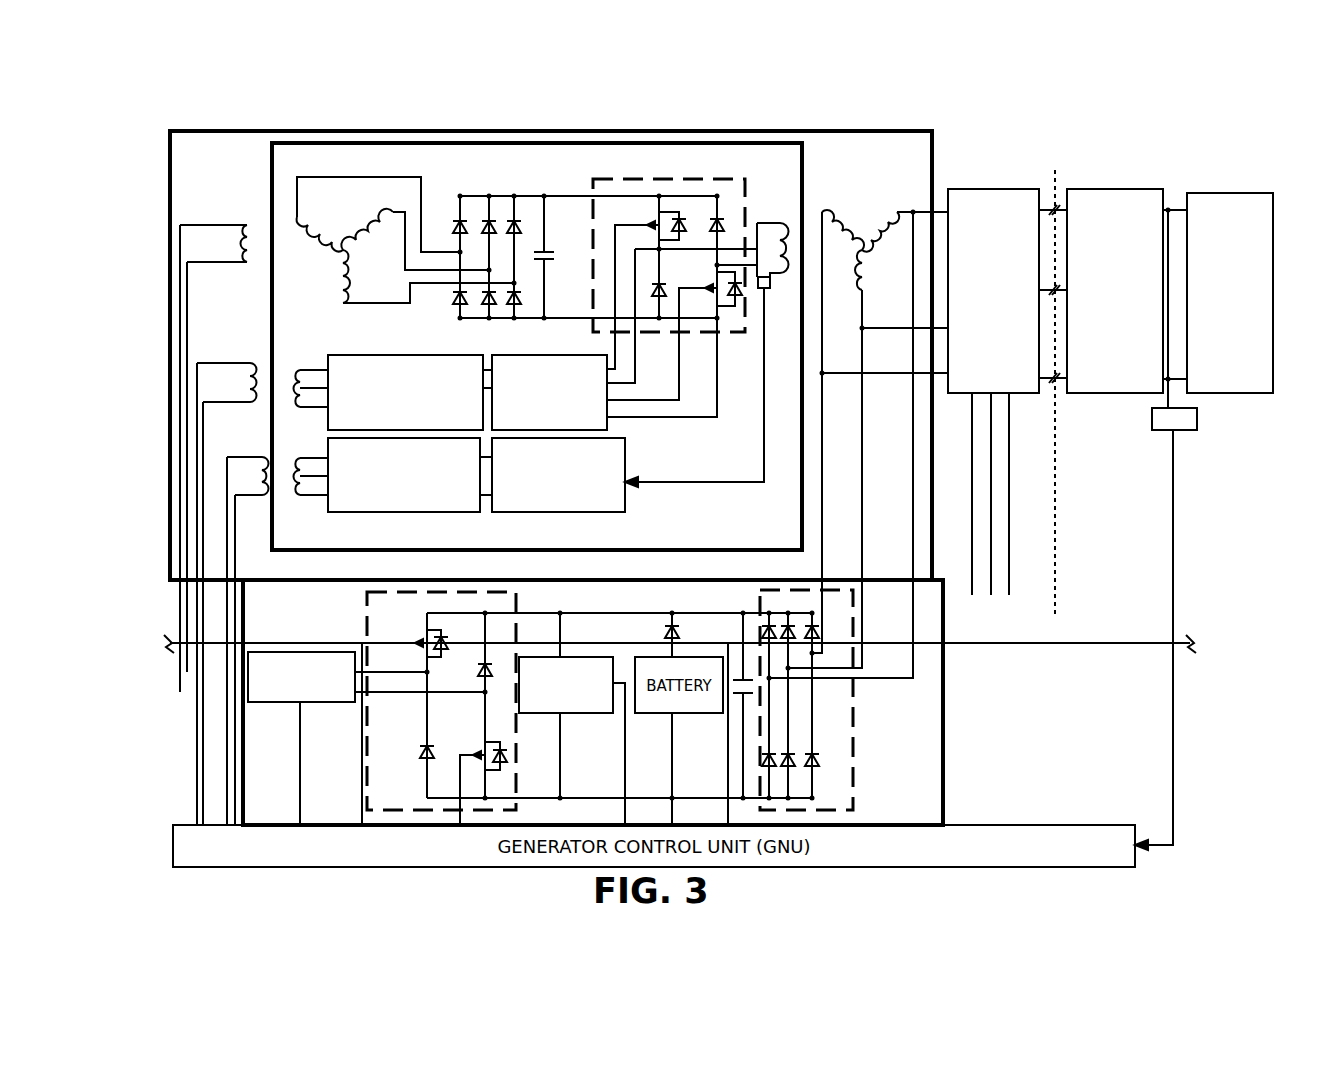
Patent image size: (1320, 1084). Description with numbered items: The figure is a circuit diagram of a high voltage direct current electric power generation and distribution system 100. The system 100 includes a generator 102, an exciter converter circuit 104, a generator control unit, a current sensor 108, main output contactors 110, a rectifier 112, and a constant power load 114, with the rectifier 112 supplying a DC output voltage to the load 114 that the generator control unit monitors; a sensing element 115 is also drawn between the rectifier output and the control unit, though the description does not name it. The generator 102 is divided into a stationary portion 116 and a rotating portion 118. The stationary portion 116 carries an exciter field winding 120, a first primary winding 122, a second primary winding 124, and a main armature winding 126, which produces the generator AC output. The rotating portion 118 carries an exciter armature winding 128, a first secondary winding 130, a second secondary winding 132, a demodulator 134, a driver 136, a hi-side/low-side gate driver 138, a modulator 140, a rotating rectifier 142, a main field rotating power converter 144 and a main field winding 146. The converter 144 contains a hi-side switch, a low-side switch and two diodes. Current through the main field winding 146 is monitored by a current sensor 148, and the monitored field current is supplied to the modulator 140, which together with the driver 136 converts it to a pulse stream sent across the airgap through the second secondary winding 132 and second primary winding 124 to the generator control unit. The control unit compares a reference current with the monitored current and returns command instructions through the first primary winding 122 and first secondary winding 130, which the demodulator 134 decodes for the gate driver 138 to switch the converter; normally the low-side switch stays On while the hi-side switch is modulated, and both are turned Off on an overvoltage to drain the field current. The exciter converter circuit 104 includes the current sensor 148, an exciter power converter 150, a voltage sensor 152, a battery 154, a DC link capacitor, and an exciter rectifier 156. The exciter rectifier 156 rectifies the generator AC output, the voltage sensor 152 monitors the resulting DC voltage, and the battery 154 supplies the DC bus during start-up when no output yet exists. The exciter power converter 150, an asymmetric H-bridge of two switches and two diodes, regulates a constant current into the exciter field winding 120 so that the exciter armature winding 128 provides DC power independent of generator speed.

The system 100 is at (250, 112).
The generator 102 is at (317, 122).
The exciter converter circuit 104 is at (943, 753).
The current sensor 108 is at (965, 189).
The main output contactors 110 is at (1050, 160).
The rectifier 112 is at (1085, 189).
The constant power load 114 is at (1205, 193).
The voltage sensor 115 is at (1152, 418).
The stationary portion 116 is at (245, 156).
The rotating portion 118 is at (496, 166).
The exciter field winding 120 is at (247, 264).
The first primary winding 122 is at (237, 362).
The second primary winding 124 is at (260, 456).
The main armature winding 126 is at (880, 232).
The exciter armature winding 128 is at (361, 222).
The first secondary winding 130 is at (300, 371).
The second secondary winding 132 is at (300, 459).
The demodulator 134 is at (420, 354).
The driver 136 is at (420, 513).
The hi-side/low-side gate driver 138 is at (506, 354).
The modulator 140 is at (560, 513).
The rotating rectifier 142 is at (478, 194).
The main field rotating power converter 144 is at (600, 180).
The main field winding 146 is at (757, 222).
The current sensor 148 is at (772, 289).
The exciter power converter 150 is at (367, 613).
The voltage sensor 152 is at (572, 656).
The battery 154 is at (660, 657).
The exciter rectifier 156 is at (853, 760).